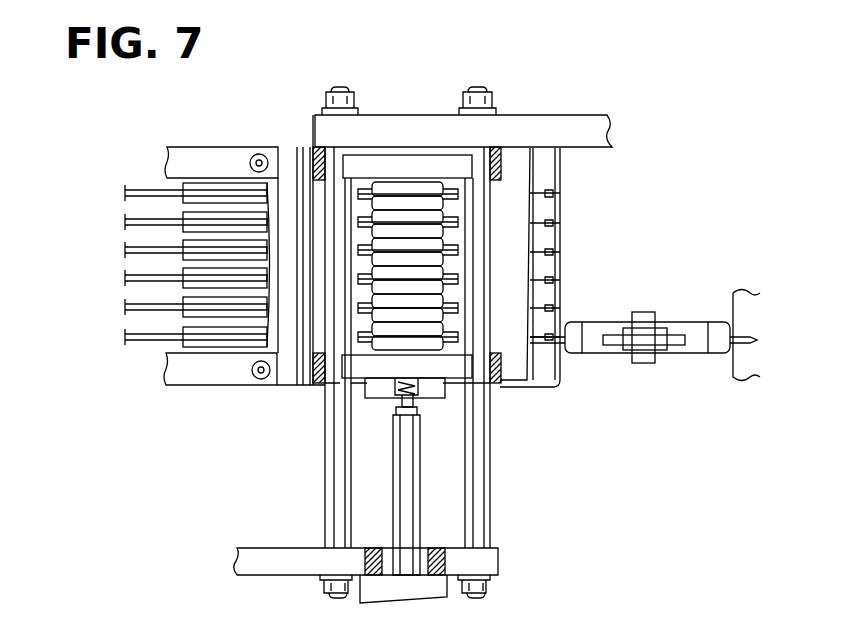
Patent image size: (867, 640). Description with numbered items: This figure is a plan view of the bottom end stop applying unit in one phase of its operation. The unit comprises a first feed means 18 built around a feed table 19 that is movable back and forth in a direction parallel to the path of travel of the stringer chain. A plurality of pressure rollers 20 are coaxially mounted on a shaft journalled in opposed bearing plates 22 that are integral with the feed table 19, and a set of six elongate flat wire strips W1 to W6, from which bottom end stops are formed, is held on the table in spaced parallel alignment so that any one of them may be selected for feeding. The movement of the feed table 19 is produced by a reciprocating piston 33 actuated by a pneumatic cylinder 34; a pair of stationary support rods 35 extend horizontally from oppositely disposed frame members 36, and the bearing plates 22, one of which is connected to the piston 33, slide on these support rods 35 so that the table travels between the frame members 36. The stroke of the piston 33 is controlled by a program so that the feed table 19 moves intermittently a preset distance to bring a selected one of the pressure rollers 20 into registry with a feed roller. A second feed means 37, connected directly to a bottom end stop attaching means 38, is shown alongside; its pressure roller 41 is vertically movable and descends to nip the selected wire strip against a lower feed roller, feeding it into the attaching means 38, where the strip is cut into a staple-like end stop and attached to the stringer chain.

The first feed means 18 is at (442, 92).
The feed table 19 is at (291, 165).
The pressure rollers 20 is at (391, 187).
The bearing plates 22 is at (353, 367).
The reciprocating piston 33 is at (407, 492).
The pneumatic cylinder 34 is at (418, 587).
The stationary support rods 35 is at (334, 470).
The frame members 36 is at (569, 128).
The second feed means 37 is at (643, 365).
The bottom end stop attaching means 38 is at (740, 305).
The pressure roller 41 is at (656, 333).
The wire strip W1 is at (126, 193).
The wire strip W6 is at (126, 338).